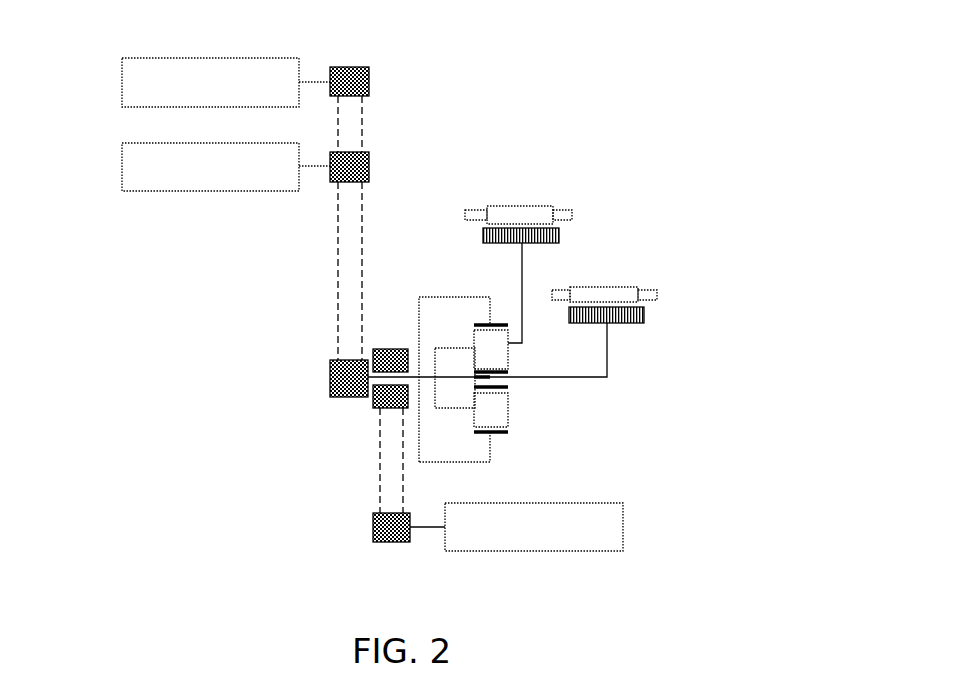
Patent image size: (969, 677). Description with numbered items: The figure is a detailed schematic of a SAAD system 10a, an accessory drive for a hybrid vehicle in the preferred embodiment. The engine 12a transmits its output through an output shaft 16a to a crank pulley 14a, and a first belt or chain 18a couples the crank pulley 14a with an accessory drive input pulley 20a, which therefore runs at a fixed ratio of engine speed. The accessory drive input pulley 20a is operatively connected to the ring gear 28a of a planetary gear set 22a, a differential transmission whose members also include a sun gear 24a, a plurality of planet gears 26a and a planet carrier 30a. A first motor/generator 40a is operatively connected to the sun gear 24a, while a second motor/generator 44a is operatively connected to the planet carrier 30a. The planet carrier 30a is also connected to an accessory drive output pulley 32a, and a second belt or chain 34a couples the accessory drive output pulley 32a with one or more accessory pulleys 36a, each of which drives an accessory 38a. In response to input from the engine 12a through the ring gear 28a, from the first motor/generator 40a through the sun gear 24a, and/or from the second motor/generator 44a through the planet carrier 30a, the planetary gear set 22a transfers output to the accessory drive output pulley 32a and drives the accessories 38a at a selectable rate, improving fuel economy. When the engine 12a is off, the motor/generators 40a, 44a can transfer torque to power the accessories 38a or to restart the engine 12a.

The SAAD system 10a is at (640, 82).
The engine 12a is at (587, 551).
The crank pulley 14a is at (383, 542).
The output shaft 16a is at (427, 527).
The first belt or chain 18a is at (376, 507).
The accessory drive input pulley 20a is at (393, 349).
The planetary gear set 22a is at (550, 430).
The sun gear 24a is at (510, 372).
The planet gears 26a is at (480, 340).
The ring gear 28a is at (503, 325).
The planet carrier 30a is at (456, 408).
The accessory drive output pulley 32a is at (330, 372).
The second belt or chain 34a is at (364, 250).
The accessory pulleys 36a is at (358, 67).
The accessories 38a is at (130, 58).
The first motor/generator 40a is at (629, 286).
The second motor/generator 44a is at (542, 205).